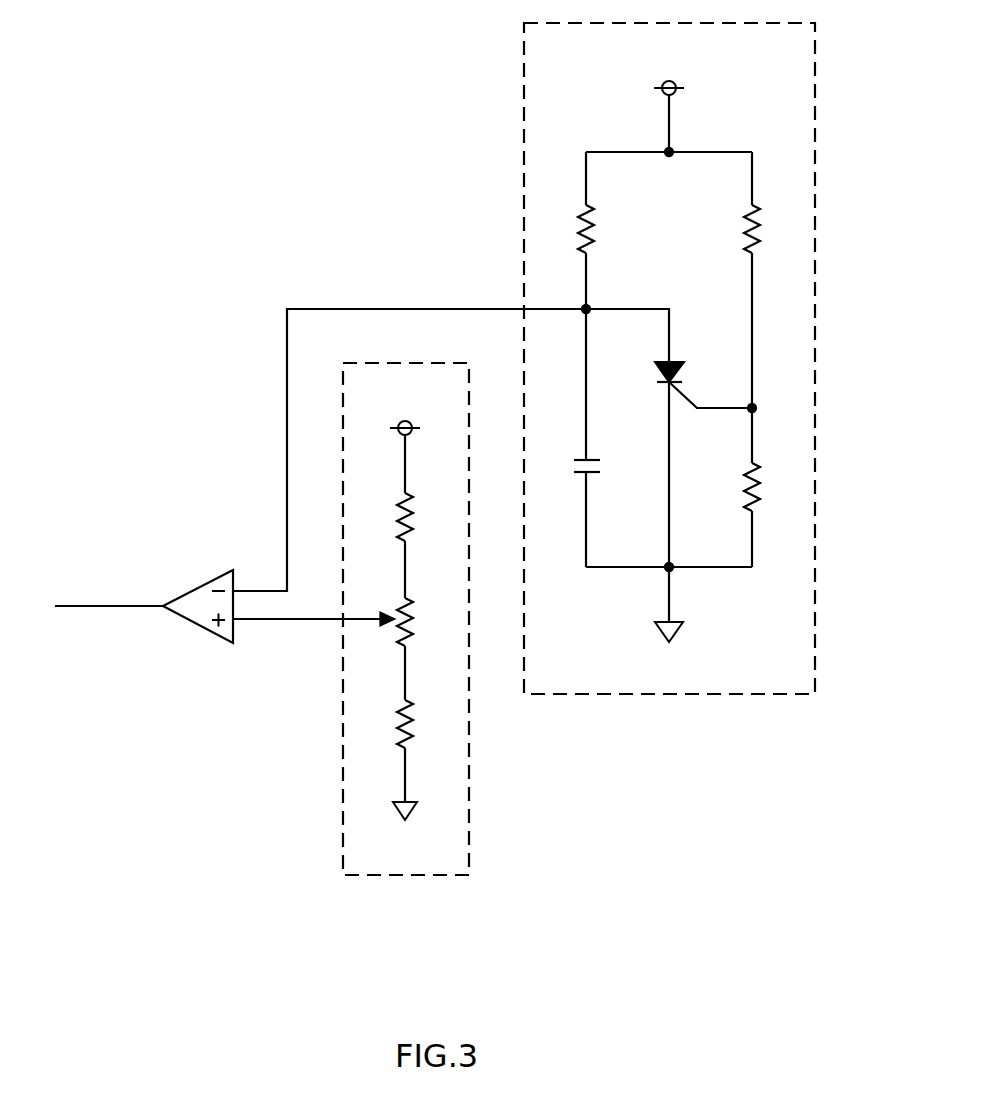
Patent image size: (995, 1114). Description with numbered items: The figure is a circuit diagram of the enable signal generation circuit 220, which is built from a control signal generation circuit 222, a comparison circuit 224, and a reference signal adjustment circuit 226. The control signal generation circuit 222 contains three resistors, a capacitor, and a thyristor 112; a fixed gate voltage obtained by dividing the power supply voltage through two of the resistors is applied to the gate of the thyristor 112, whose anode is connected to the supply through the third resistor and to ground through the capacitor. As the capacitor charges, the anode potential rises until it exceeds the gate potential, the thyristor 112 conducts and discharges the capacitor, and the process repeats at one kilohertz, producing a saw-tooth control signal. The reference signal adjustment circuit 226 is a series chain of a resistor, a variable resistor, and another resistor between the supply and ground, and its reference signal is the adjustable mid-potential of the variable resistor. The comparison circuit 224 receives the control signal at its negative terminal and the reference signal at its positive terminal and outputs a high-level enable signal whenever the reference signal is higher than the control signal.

The thyristor 112 is at (684, 338).
The enable signal generation circuit 220 is at (435, 484).
The control signal generation circuit 222 is at (669, 388).
The comparison circuit 224 is at (200, 586).
The reference signal adjustment circuit 226 is at (469, 772).